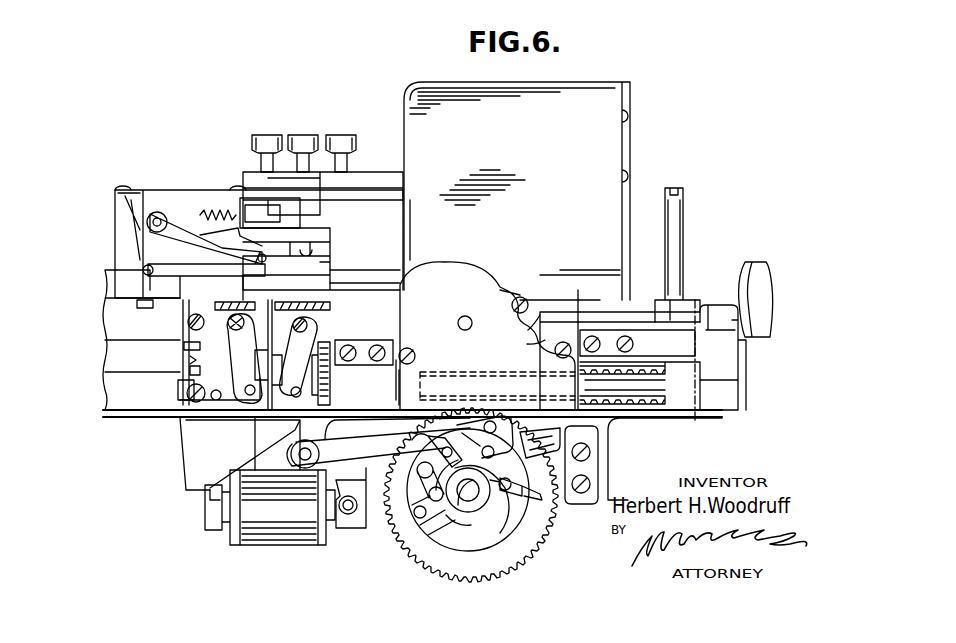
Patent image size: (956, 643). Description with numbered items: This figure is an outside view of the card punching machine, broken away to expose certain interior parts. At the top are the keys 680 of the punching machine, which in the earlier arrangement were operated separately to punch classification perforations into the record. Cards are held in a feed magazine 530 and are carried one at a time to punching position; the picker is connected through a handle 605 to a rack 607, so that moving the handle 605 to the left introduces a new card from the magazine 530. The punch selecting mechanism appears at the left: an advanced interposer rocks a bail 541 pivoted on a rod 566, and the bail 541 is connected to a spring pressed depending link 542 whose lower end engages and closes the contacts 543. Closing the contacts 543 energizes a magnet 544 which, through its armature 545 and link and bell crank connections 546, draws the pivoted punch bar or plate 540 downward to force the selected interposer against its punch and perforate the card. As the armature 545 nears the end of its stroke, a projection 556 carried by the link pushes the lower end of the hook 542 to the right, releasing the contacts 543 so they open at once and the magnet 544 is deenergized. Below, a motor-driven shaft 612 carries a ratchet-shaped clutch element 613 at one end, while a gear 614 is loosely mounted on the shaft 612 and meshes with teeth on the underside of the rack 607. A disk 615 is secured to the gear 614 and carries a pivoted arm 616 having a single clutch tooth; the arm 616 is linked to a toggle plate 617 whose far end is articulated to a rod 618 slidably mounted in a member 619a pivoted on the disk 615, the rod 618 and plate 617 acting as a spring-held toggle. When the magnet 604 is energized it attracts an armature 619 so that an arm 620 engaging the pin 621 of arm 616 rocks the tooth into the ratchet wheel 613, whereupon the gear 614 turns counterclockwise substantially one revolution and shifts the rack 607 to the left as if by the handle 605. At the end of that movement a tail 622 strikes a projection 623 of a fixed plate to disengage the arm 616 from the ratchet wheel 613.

The feed magazine 530 is at (688, 264).
The punch bar or plate 540 is at (192, 205).
The bail 541 is at (240, 238).
The spring pressed depending link 542 is at (288, 290).
The contacts 543 is at (258, 338).
The magnet 544 is at (326, 378).
The armature 545 is at (300, 334).
The link and bell crank connections 546 is at (188, 367).
The projection 556 is at (262, 398).
The rod 566 is at (186, 276).
The magnet 604 is at (258, 480).
The handle 605 is at (758, 262).
The rack 607 is at (628, 408).
The shaft 612 is at (470, 505).
The ratchet-shaped clutch element 613 is at (470, 440).
The gear 614 is at (512, 565).
The disk 615 is at (510, 508).
The arm 616 is at (420, 466).
The toggle plate 617 is at (440, 515).
The rod 618 is at (515, 480).
The armature 619 is at (352, 525).
The member 619a is at (598, 466).
The arm 620 is at (376, 444).
The pin 621 is at (430, 445).
The tail 622 is at (490, 404).
The projection 623 is at (600, 396).
The keys 680 is at (338, 134).